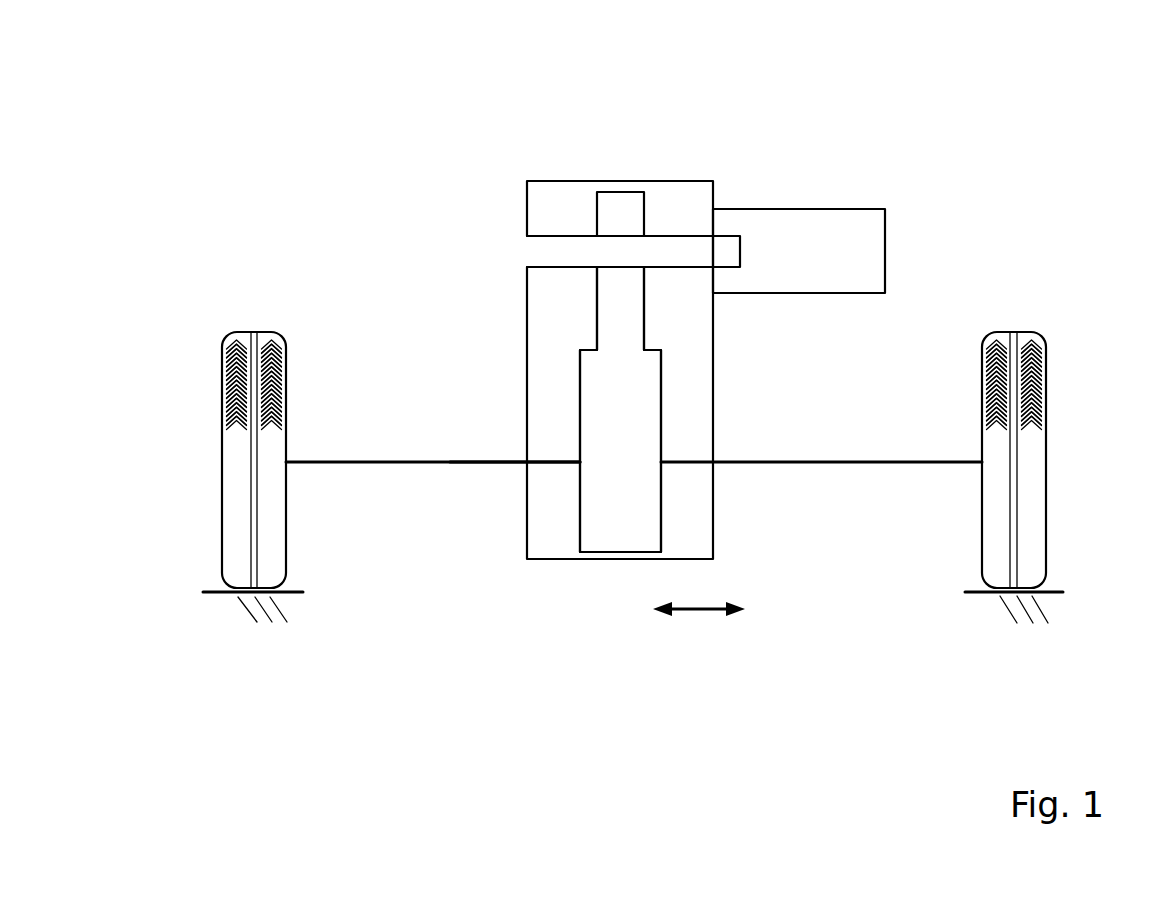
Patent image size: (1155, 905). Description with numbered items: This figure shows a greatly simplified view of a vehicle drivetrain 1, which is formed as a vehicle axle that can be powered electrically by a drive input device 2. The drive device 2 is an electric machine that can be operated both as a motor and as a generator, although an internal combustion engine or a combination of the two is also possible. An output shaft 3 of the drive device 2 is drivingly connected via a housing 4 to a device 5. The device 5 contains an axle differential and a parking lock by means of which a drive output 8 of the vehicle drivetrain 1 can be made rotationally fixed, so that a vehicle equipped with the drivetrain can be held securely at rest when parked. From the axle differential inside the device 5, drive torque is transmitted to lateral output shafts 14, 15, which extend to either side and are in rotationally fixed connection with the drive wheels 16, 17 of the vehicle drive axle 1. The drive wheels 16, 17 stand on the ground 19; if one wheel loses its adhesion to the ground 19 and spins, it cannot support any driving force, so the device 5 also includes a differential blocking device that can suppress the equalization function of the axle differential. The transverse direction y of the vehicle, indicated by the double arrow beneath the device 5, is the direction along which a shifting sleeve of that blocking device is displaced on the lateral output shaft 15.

The vehicle drivetrain 1 is at (340, 205).
The drive input device 2 is at (839, 203).
The output shaft 3 is at (722, 252).
The housing 4 is at (622, 210).
The device 5 is at (617, 522).
The drive output 8 is at (502, 475).
The lateral output shaft 14 is at (366, 465).
The lateral output shaft 15 is at (836, 465).
The drive wheel 16 is at (287, 545).
The drive wheel 17 is at (982, 533).
The ground 19 is at (1013, 607).
The transverse direction y is at (699, 612).